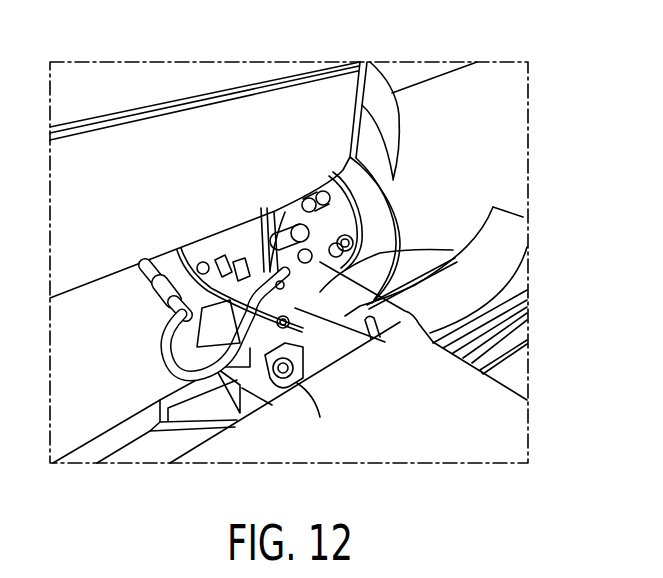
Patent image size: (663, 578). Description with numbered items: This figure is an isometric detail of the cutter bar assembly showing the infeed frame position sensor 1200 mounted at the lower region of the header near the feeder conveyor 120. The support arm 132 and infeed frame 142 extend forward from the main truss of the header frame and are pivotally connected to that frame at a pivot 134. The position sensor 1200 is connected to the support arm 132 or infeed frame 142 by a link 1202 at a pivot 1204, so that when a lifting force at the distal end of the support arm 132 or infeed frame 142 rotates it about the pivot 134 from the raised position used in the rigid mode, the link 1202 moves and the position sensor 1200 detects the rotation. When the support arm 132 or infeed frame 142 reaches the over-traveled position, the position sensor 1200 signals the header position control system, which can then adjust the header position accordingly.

The feeder conveyor 120 is at (437, 447).
The support arm 132 is at (325, 352).
The infeed frame 142 is at (455, 347).
The pivot 134 is at (292, 390).
The position sensor 1200 is at (238, 250).
The link 1202 is at (176, 260).
The pivot 1204 is at (453, 250).